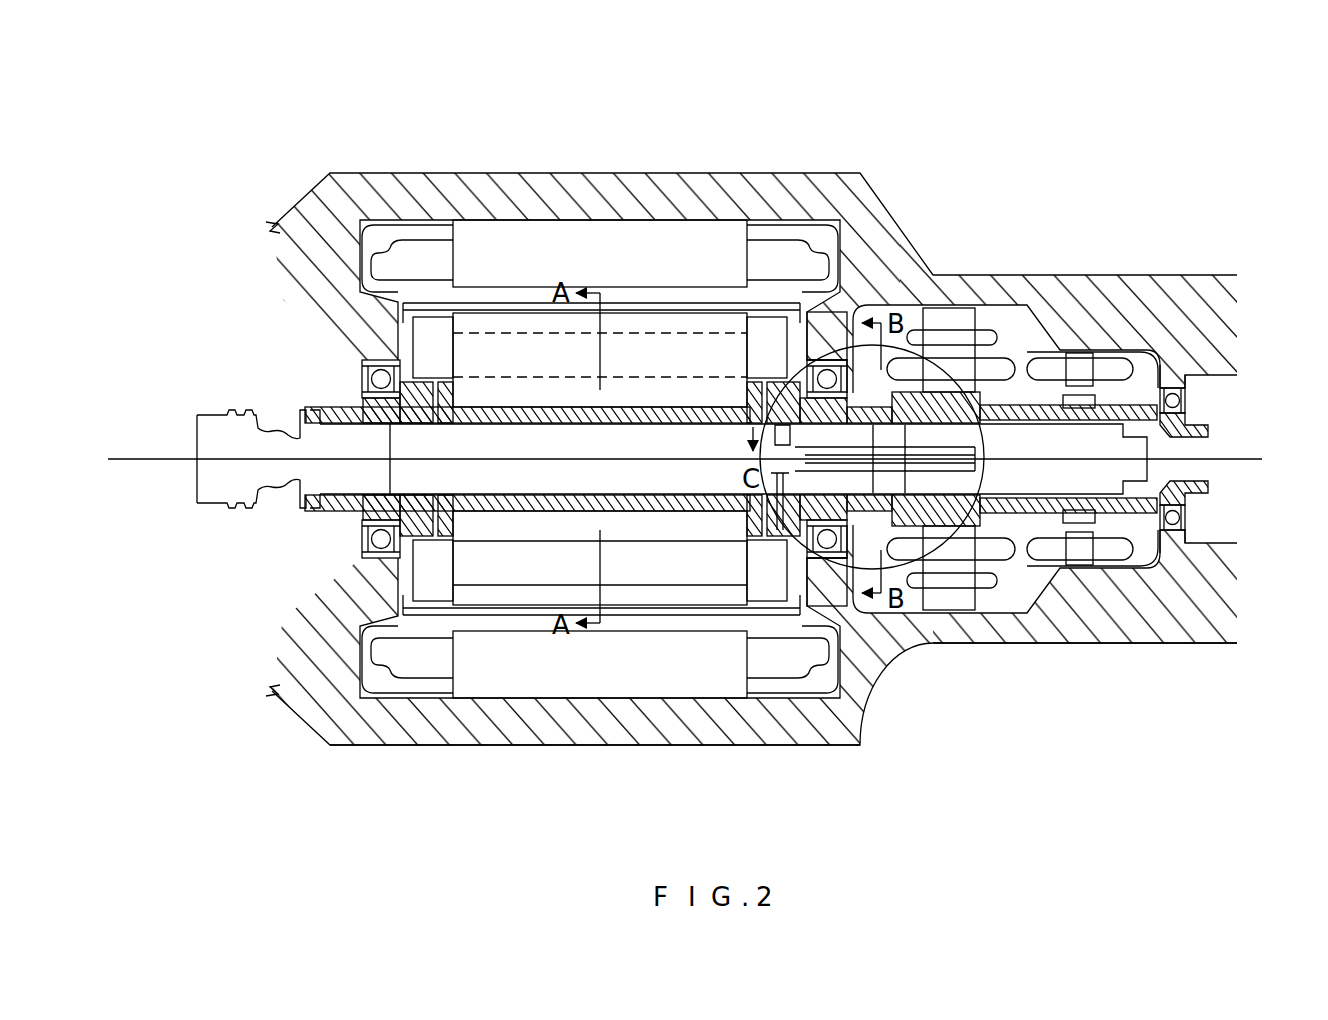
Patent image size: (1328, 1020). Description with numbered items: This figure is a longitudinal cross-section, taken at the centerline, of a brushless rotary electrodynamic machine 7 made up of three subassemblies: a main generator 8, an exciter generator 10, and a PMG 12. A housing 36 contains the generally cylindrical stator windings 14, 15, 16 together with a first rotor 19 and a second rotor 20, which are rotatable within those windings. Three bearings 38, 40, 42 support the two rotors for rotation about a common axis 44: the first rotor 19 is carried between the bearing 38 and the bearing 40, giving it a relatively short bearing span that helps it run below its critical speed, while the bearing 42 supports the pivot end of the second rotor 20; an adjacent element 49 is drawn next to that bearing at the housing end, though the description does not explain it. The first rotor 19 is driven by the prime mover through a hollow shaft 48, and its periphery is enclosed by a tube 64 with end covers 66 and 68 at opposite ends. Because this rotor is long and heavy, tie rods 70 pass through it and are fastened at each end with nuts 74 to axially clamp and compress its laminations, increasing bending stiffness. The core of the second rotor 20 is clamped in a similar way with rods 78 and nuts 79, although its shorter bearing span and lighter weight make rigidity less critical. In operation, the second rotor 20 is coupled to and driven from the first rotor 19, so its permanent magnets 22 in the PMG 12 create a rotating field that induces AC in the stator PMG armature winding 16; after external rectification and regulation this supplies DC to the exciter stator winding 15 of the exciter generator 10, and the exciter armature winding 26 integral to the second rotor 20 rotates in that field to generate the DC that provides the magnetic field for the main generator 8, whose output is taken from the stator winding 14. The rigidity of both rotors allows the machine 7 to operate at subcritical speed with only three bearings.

The rotary electrodynamic machine 7 is at (722, 116).
The main generator 8 is at (553, 774).
The exciter generator 10 is at (955, 697).
The PMG 12 is at (1085, 672).
The stator winding 14 is at (670, 218).
The stator winding 15 is at (935, 372).
The stator PMG armature winding 16 is at (1170, 386).
The first rotor 19 is at (400, 568).
The second rotor 20 is at (1158, 522).
The permanent magnets 22 is at (1118, 492).
The exciter armature winding 26 is at (1003, 308).
The housing 36 is at (768, 172).
The bearing 38 is at (362, 372).
The bearing 40 is at (822, 360).
The bearing 42 is at (1176, 396).
The common axis 44 is at (150, 460).
The hollow shaft 48 is at (360, 520).
The bearing retainer 49 is at (1190, 426).
The tube 64 is at (530, 617).
The end cover 66 is at (392, 568).
The end cover 68 is at (822, 608).
The tie rods 70 is at (685, 592).
The nuts 74 is at (460, 590).
The rods 78 is at (920, 395).
The nuts 79 is at (932, 393).